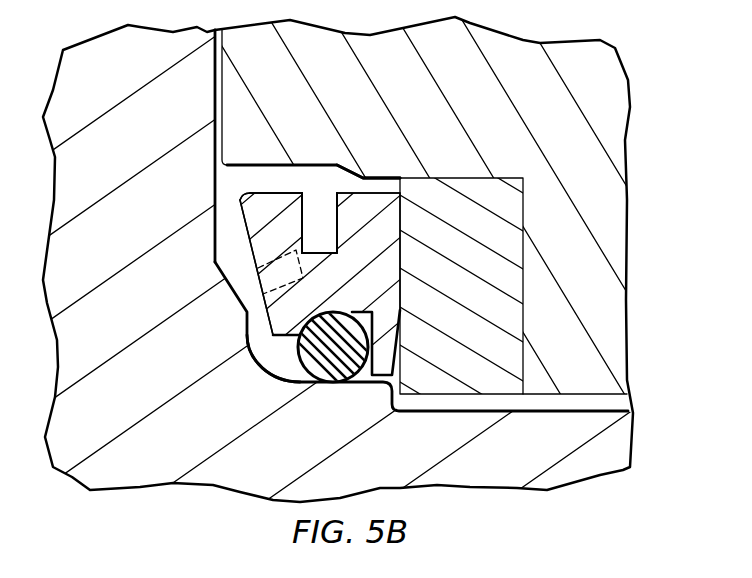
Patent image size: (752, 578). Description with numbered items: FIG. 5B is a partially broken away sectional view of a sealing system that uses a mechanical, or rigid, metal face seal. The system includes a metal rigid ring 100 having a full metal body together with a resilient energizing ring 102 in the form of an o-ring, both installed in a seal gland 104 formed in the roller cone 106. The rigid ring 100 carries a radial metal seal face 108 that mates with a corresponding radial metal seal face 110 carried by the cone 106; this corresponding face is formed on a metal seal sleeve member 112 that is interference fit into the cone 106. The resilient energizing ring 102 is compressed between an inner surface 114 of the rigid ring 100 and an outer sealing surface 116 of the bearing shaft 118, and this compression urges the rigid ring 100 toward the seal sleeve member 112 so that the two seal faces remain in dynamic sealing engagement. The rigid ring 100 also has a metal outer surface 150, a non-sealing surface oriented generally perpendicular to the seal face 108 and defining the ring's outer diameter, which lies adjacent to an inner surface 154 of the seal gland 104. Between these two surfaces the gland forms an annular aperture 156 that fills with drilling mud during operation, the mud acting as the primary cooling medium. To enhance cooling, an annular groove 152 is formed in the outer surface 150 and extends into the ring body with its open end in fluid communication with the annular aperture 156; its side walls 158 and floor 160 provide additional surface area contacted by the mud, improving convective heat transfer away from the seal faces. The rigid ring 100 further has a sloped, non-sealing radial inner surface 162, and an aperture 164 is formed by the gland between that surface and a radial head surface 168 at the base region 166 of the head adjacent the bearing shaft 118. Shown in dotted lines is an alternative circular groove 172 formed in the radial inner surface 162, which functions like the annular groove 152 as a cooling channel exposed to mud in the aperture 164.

The metal rigid ring 100 is at (252, 328).
The resilient energizing ring 102 is at (291, 352).
The seal gland 104 is at (381, 118).
The roller cone 106 is at (629, 197).
The radial metal seal face 108 is at (401, 218).
The corresponding radial metal seal face 110 is at (391, 193).
The metal seal sleeve member 112 is at (510, 313).
The inner surface of the rigid ring 114 is at (376, 318).
The outer sealing surface of the bearing shaft 116 is at (323, 382).
The bearing shaft 118 is at (472, 456).
The metal outer surface 150 is at (279, 194).
The annular groove 152 is at (316, 206).
The inner surface of the seal gland 154 is at (257, 173).
The annular aperture 156 is at (340, 205).
The side walls of the annular groove 158 is at (336, 214).
The floor of the annular groove 160 is at (310, 252).
The radial inner surface 162 is at (242, 240).
The aperture 164 is at (226, 210).
The base region of the head 166 is at (134, 158).
The radial head surface 168 is at (214, 173).
The circular groove 172 is at (260, 270).